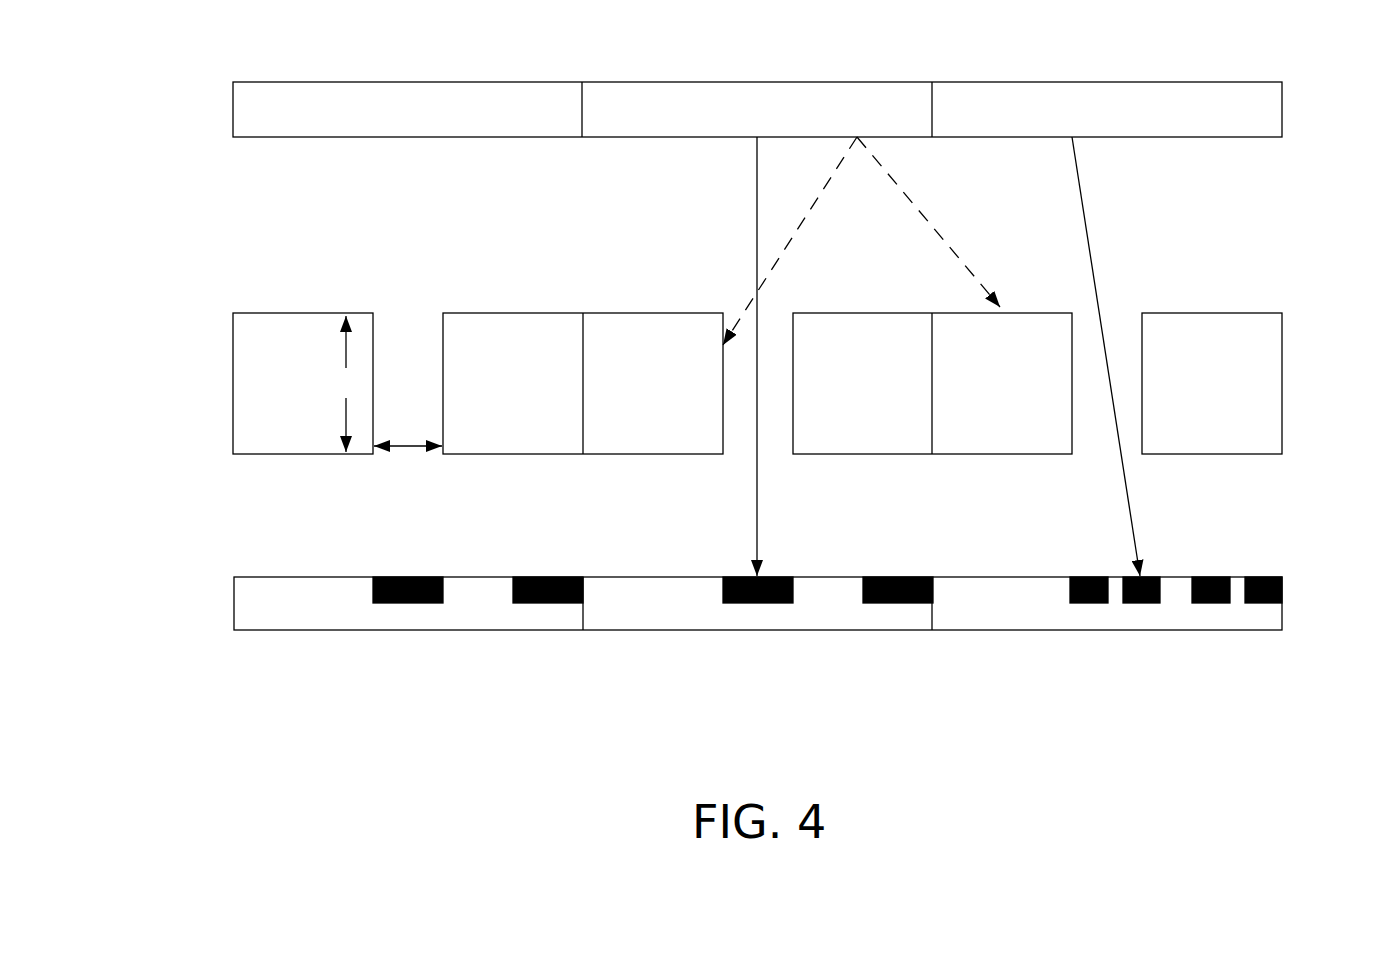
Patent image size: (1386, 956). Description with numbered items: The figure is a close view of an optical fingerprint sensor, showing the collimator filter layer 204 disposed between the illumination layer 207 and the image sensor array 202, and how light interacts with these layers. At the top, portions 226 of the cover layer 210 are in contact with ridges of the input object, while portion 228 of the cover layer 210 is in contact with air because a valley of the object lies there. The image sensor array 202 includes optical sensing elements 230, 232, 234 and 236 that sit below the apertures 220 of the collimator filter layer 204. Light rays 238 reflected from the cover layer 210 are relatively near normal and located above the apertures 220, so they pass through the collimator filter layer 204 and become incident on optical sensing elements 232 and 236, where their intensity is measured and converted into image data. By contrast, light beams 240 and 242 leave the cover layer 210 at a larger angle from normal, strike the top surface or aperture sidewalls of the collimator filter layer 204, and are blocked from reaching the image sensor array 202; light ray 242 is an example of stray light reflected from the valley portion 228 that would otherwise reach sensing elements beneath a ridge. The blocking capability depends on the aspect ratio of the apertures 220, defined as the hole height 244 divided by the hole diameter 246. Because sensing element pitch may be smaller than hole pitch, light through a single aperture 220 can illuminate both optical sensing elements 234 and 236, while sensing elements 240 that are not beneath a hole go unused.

The image sensor array 202 is at (205, 577).
The collimator filter layer 204 is at (691, 406).
The illumination layer 207 is at (205, 143).
The cover layer 210 is at (691, 85).
The apertures 220 is at (410, 312).
The portions of the cover layer 226 is at (323, 82).
The portion of the cover layer 228 is at (661, 82).
The optical sensing element 230 is at (407, 604).
The optical sensing element 232 is at (753, 604).
The optical sensing element 234 is at (1095, 604).
The optical sensing element 236 is at (1153, 576).
The light rays 238 is at (757, 230).
The light beams / unused optical sensing elements 240 is at (820, 192).
The light ray 242 is at (928, 218).
The height of the holes (h) 244 is at (328, 385).
The hole diameter (d) 246 is at (418, 487).